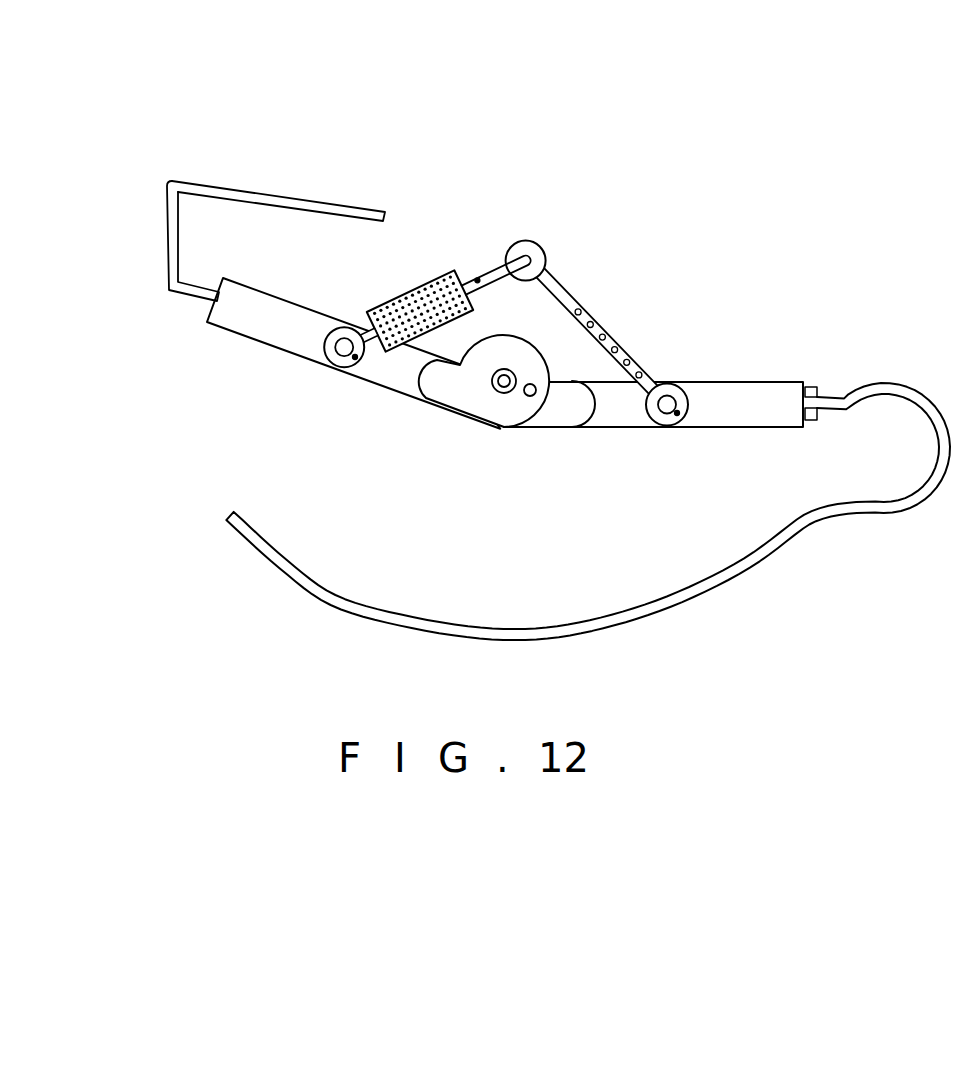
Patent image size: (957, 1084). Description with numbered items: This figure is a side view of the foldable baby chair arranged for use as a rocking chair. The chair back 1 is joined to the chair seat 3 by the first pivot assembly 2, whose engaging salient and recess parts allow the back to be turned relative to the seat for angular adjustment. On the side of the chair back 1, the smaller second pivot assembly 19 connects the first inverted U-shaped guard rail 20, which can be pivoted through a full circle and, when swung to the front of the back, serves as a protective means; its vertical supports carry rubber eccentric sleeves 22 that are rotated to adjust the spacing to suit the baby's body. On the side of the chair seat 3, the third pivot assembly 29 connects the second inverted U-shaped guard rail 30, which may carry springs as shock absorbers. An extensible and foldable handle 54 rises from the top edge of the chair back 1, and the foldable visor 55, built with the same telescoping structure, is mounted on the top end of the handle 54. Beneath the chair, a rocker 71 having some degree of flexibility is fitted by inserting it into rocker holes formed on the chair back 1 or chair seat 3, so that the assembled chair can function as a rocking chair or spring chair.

The chair back 1 is at (250, 325).
The first pivot assembly 2 is at (504, 408).
The chair seat 3 is at (778, 393).
The second pivot assembly 19 is at (337, 367).
The first inverted U-shaped guard rail 20 is at (466, 278).
The eccentric sleeve 22 is at (408, 290).
The third pivot assembly 29 is at (663, 424).
The second inverted U-shaped guard rail 30 is at (602, 326).
The extensible and foldable handle 54 is at (167, 233).
The foldable visor 55 is at (282, 198).
The rocker 71 is at (760, 558).